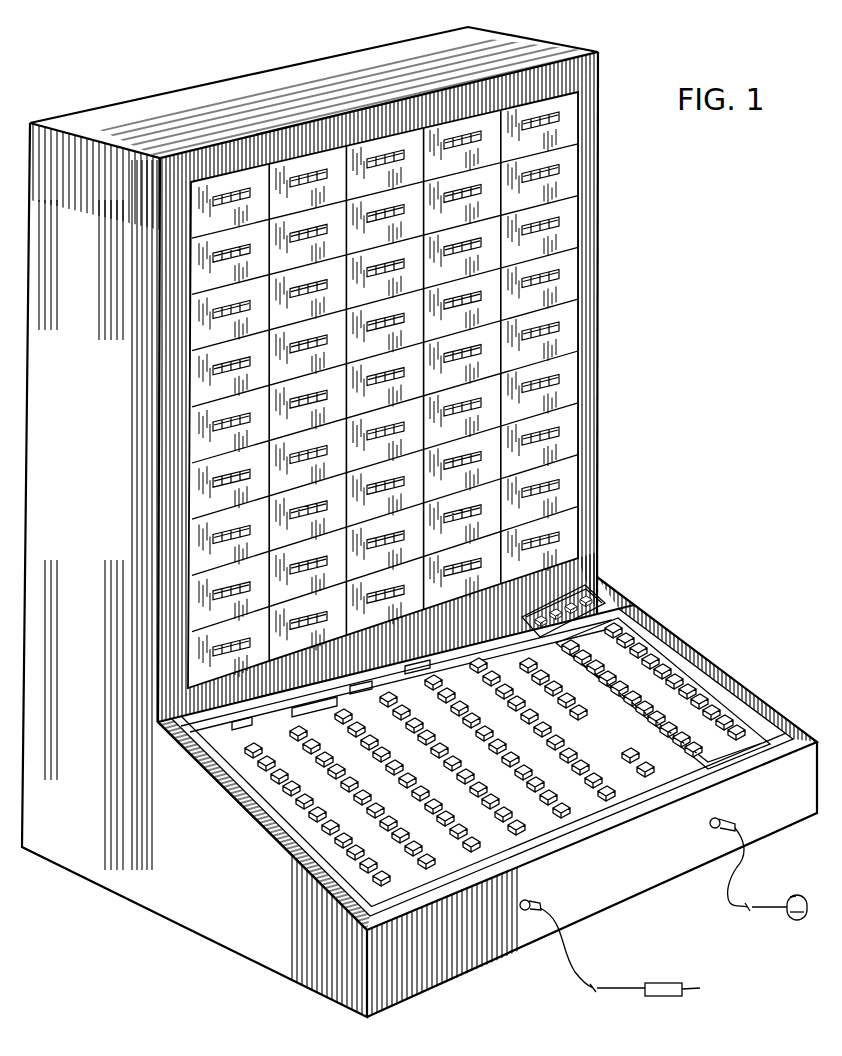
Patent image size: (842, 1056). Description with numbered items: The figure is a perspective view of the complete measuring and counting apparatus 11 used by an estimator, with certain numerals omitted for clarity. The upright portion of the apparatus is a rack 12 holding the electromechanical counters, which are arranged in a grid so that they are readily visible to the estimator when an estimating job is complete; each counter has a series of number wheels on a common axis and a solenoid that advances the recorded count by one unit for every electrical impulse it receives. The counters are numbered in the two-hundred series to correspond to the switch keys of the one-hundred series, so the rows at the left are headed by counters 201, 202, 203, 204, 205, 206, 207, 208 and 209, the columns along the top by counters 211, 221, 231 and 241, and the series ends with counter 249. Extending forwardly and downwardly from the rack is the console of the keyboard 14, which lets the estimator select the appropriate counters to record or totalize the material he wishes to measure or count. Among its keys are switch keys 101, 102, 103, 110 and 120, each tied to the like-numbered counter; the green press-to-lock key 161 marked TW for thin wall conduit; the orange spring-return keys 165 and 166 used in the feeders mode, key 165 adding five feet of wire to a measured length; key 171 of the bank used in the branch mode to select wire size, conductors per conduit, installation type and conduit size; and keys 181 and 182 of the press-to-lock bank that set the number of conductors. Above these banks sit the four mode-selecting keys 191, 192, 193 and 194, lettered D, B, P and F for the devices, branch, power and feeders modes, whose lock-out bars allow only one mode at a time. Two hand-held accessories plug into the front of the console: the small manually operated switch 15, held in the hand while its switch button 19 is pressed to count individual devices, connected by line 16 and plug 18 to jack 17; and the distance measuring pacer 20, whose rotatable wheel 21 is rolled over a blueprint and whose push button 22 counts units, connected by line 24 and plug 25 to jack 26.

The measuring and counting apparatus 11 is at (633, 279).
The rack 12 is at (600, 182).
The keyboard 14 is at (742, 690).
The manually operated switch 15 is at (672, 997).
The line 16 is at (556, 965).
The jack 17 is at (530, 900).
The plug 18 is at (542, 906).
The switch button 19 is at (692, 986).
The pacer 20 is at (795, 896).
The rotatable wheel 21 is at (800, 916).
The push button 22 is at (805, 897).
The line 24 is at (725, 888).
The plug 25 is at (738, 826).
The jack 26 is at (720, 818).
The switch key 101 is at (250, 750).
The switch key 102 is at (266, 762).
The switch key 103 is at (280, 776).
The switch key 110 is at (345, 880).
The switch key 120 is at (430, 868).
The switch key 161 is at (525, 660).
The switch key 165 is at (627, 750).
The switch key 166 is at (648, 768).
The switch key 171 is at (562, 642).
The switch key 181 is at (618, 625).
The switch key 182 is at (630, 636).
The switch key 191 is at (541, 615).
The switch key 192 is at (556, 608).
The switch key 193 is at (571, 603).
The switch key 194 is at (587, 597).
The electromechanical counter 201 is at (190, 218).
The electromechanical counter 202 is at (190, 268).
The electromechanical counter 203 is at (190, 315).
The electromechanical counter 204 is at (190, 370).
The electromechanical counter 205 is at (190, 425).
The electromechanical counter 206 is at (190, 485).
The electromechanical counter 207 is at (190, 538).
The electromechanical counter 208 is at (188, 594).
The electromechanical counter 209 is at (188, 660).
The electromechanical counter 211 is at (290, 158).
The electromechanical counter 221 is at (358, 140).
The electromechanical counter 231 is at (440, 118).
The electromechanical counter 241 is at (512, 114).
The electromechanical counter 249 is at (586, 583).